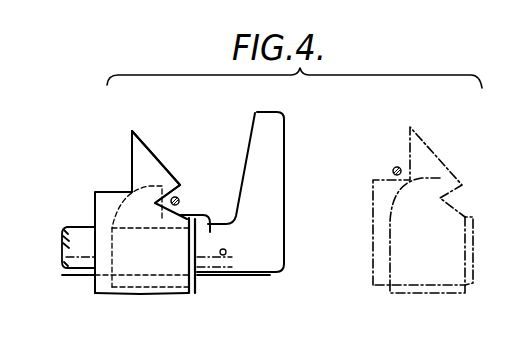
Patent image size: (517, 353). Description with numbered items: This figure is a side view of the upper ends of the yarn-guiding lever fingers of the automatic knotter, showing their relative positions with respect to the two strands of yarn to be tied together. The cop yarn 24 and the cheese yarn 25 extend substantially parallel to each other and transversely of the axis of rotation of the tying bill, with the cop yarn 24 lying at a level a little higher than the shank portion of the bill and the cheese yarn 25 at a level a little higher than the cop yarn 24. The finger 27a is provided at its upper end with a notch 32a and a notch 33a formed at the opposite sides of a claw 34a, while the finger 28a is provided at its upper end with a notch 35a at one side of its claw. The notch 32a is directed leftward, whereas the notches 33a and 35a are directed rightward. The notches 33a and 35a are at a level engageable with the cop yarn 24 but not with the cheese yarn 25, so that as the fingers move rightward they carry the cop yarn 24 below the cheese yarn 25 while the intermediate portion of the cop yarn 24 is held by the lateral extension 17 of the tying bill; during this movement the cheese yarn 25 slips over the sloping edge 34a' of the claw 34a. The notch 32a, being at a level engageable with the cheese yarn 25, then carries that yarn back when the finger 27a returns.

The lateral extension 17 is at (273, 168).
The cop yarn 24 is at (179, 201).
The cheese yarn 25 is at (393, 168).
The finger 27a is at (101, 294).
The finger 28a is at (170, 294).
The notch 32a is at (110, 184).
The notch 33a is at (244, 264).
The notch 35a is at (210, 226).
The claw 34a is at (109, 161).
The sloping edge 34a' is at (172, 157).